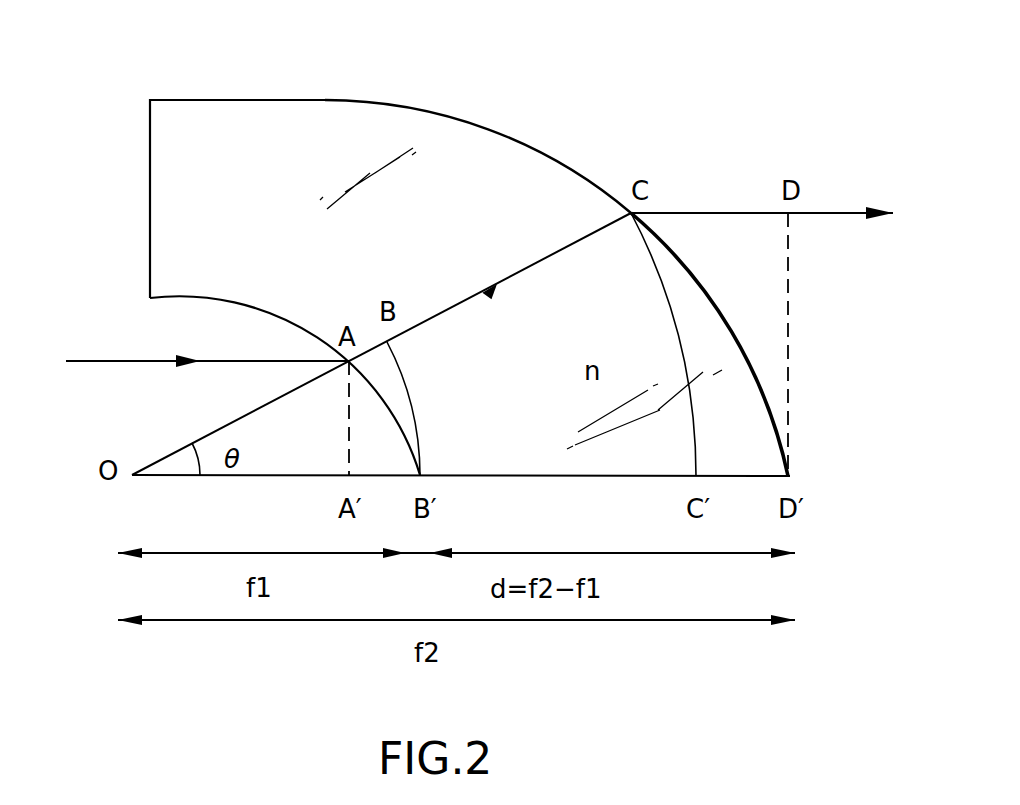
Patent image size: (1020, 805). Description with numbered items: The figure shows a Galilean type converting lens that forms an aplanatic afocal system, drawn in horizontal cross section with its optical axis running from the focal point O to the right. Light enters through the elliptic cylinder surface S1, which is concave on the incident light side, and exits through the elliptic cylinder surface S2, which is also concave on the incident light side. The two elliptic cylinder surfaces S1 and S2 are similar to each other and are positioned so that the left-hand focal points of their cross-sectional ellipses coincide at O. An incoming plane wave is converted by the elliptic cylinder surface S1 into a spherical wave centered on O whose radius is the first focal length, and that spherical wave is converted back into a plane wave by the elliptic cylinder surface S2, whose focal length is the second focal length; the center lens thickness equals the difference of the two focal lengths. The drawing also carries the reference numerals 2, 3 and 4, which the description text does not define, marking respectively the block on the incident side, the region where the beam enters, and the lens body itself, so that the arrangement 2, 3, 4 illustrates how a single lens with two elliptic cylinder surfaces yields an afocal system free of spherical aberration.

The light source body 2 is at (165, 164).
The light emitting point 3 is at (187, 298).
The lens 4 is at (469, 240).
The elliptic cylinder surface S1 is at (260, 305).
The elliptic cylinder surface S2 is at (435, 110).